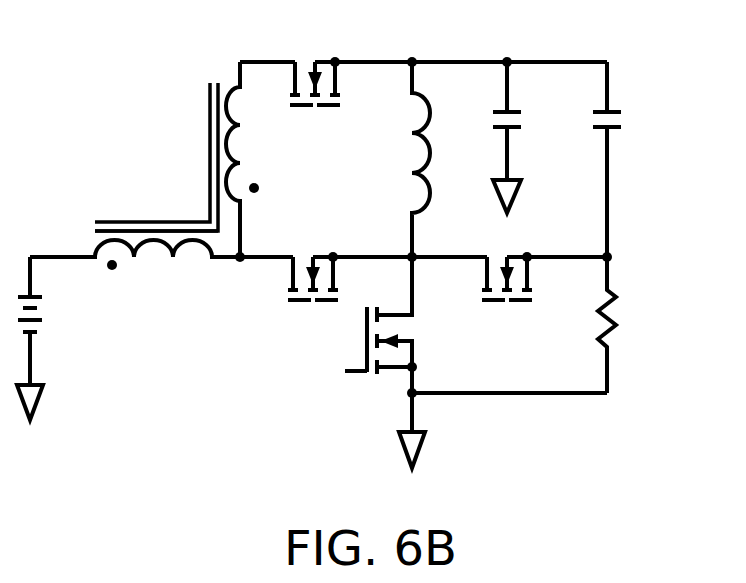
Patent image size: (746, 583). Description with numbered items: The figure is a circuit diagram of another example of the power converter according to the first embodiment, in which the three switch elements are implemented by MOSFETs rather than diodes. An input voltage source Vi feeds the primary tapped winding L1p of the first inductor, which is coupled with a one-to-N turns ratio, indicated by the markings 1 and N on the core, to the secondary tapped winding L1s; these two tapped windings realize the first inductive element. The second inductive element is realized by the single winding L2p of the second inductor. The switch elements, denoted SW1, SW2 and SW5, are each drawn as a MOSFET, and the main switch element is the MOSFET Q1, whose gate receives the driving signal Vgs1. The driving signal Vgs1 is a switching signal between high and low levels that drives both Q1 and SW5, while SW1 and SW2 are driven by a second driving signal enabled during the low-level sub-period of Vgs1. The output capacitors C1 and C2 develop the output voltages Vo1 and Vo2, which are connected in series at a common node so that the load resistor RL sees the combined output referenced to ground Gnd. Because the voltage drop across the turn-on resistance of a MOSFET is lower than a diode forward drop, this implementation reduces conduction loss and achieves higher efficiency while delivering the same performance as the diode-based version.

The turns ratio N is at (156, 157).
The turns ratio 1 is at (156, 206).
The tapped winding L1s is at (262, 159).
The tapped winding L1p is at (135, 275).
The single winding L2p is at (388, 159).
The input voltage source Vi is at (49, 338).
The switch element SW1 is at (315, 62).
The switch element SW5 is at (307, 257).
The switch element SW2 is at (501, 257).
The output capacitor C1 is at (484, 137).
The output capacitor C2 is at (584, 159).
The load resistor RL is at (579, 325).
The MOSFET Q1 is at (417, 362).
The driving signal Vgs1 is at (312, 372).
The output voltage Vo1 is at (471, 38).
The output voltage Vo2 is at (623, 259).
The ground Gnd is at (547, 399).